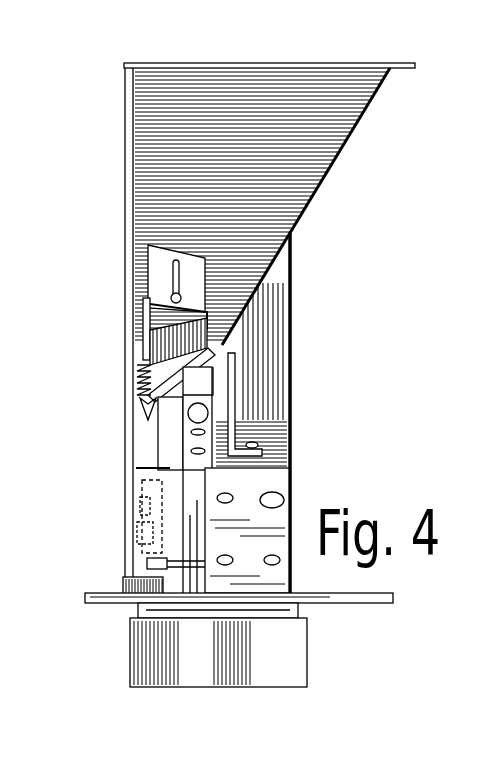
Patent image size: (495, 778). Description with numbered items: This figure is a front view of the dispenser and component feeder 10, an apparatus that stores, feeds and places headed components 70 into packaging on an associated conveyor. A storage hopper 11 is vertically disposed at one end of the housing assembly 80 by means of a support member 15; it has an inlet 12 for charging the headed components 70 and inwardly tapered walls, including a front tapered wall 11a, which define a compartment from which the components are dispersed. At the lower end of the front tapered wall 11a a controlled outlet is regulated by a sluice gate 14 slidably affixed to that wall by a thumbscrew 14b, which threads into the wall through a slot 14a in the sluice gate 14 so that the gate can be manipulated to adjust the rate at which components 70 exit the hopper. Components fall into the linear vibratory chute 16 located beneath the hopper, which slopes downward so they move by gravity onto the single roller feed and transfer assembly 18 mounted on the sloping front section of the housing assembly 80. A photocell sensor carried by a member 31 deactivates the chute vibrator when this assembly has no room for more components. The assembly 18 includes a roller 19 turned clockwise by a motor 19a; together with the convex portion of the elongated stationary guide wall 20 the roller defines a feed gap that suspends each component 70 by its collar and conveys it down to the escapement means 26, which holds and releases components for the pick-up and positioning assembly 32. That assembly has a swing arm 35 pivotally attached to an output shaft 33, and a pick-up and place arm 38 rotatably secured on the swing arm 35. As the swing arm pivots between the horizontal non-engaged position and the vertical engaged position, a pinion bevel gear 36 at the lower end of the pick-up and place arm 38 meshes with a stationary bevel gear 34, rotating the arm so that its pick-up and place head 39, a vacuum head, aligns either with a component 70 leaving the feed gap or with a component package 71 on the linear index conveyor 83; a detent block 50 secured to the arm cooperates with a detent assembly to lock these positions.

The dispenser and component feeder 10 is at (393, 131).
The storage hopper 11 is at (337, 64).
The front tapered wall 11a is at (160, 182).
The inlet 12 is at (231, 64).
The sluice gate 14 is at (158, 278).
The slot 14a is at (150, 258).
The thumbscrew 14b is at (145, 305).
The support member 15 is at (280, 287).
The linear vibratory chute 16 is at (145, 320).
The single roller feed and transfer assembly 18 is at (215, 382).
The roller 19 is at (157, 428).
The motor 19a is at (200, 366).
The elongated stationary guide wall 20 is at (150, 343).
The escapement means 26 is at (205, 352).
The member 31 is at (230, 390).
The pick-up and positioning assembly 32 is at (142, 490).
The output shaft 33 is at (198, 604).
The stationary bevel gear 34 is at (128, 572).
The swing arm 35 is at (145, 470).
The pinion bevel gear 36 is at (145, 562).
The pick-up and place arm 38 is at (140, 513).
The pick-up and place head 39 is at (146, 412).
The detent block 50 is at (142, 537).
The headed component 70 is at (147, 378).
The component package 71 is at (125, 600).
The housing assembly 80 is at (300, 478).
The linear index conveyor 83 is at (342, 600).